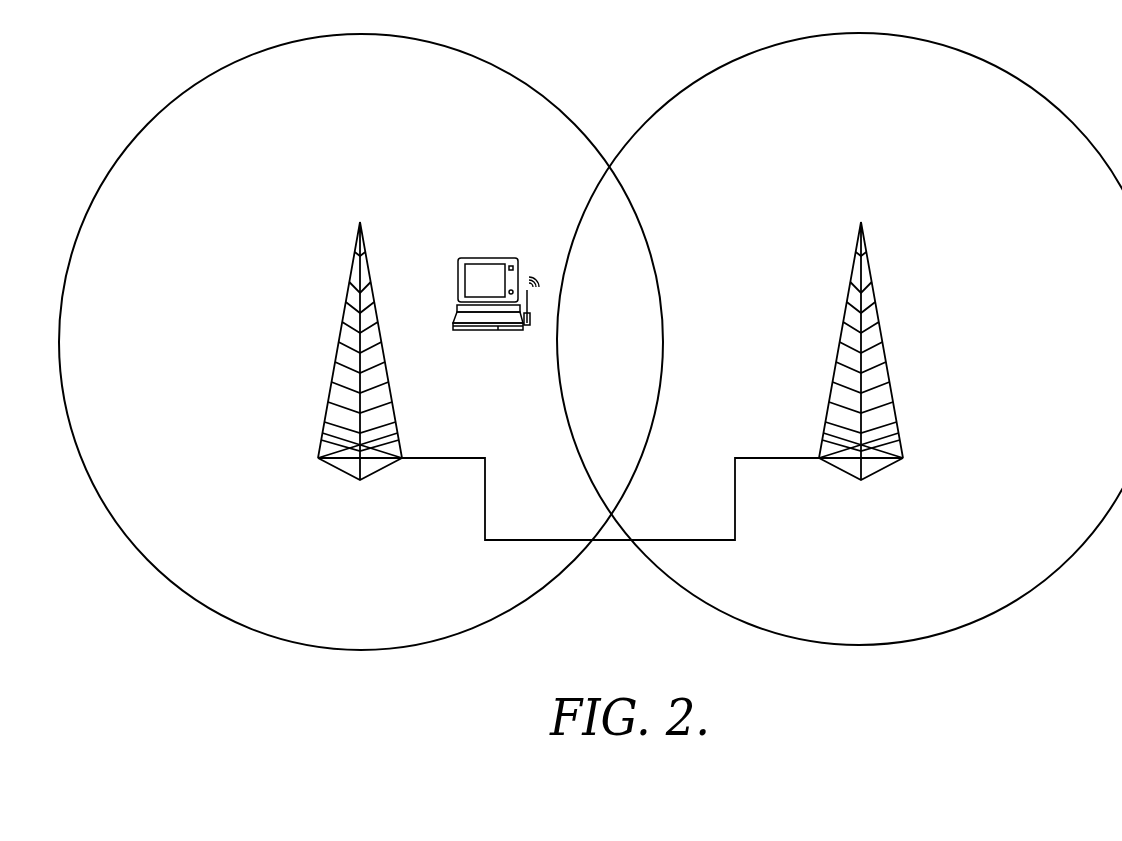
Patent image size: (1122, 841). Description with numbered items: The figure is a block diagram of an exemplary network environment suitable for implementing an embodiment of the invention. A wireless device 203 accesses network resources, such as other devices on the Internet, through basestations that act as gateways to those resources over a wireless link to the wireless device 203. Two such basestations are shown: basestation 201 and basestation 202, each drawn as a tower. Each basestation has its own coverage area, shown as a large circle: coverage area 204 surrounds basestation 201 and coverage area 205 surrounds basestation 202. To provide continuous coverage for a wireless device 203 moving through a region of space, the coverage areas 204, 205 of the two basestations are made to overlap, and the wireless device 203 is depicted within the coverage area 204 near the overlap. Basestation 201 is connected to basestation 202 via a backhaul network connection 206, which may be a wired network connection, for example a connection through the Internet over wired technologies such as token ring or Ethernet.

The basestation 201 is at (335, 355).
The basestation 202 is at (885, 353).
The wireless device 203 is at (490, 260).
The coverage area 204 is at (453, 48).
The coverage area 205 is at (1012, 72).
The backhaul network connection 206 is at (768, 457).